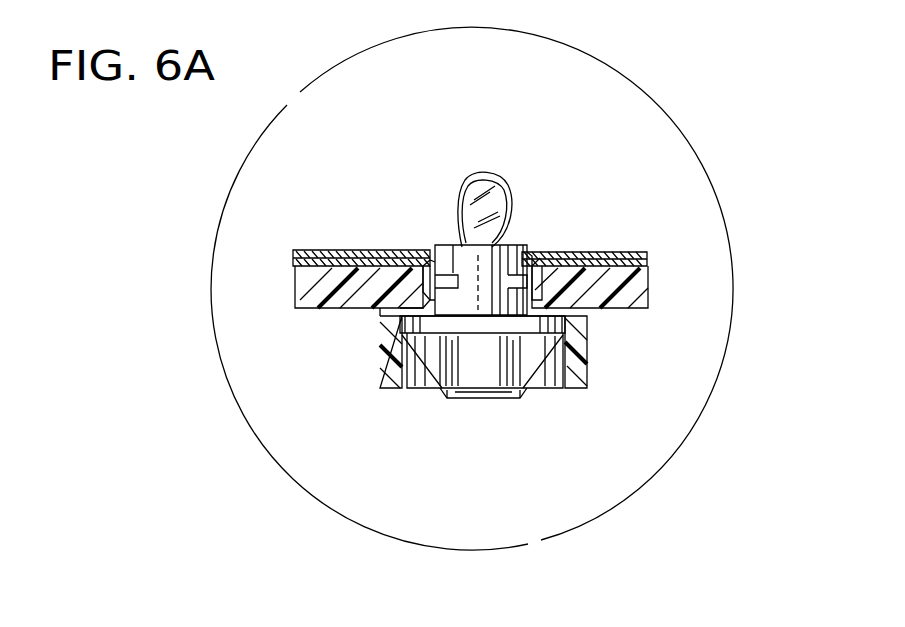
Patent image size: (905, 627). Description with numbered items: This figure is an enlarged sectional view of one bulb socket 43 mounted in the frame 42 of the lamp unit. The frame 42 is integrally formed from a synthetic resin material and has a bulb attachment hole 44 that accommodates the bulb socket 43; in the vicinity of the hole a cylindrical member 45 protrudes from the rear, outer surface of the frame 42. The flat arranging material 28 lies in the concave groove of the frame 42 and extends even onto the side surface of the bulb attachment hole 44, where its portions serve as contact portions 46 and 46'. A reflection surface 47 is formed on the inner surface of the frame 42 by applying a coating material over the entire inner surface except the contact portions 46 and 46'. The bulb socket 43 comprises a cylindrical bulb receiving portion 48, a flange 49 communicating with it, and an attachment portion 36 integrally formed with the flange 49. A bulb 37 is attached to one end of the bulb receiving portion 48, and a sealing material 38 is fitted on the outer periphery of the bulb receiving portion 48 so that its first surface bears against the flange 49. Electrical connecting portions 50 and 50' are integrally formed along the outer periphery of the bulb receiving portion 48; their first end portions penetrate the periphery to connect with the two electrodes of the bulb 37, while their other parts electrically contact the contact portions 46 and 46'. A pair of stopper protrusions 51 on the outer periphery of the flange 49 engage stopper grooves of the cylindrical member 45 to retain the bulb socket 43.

The flat arranging material 28 is at (300, 256).
The attachment portion 36 is at (482, 376).
The bulb 37 is at (483, 178).
The sealing material 38 is at (400, 322).
The frame 42 is at (297, 300).
The bulb socket 43 is at (502, 400).
The bulb attachment hole 44 is at (396, 306).
The cylindrical member 45 is at (591, 356).
The contact portion 46 is at (405, 226).
The contact portion 46' is at (590, 231).
The reflection surface 47 is at (364, 250).
The bulb receiving portion 48 is at (486, 316).
The flange 49 is at (418, 322).
The electrical connecting portion 50 is at (475, 226).
The electrical connecting portion 50' is at (538, 234).
The stopper protrusion 51 is at (574, 320).